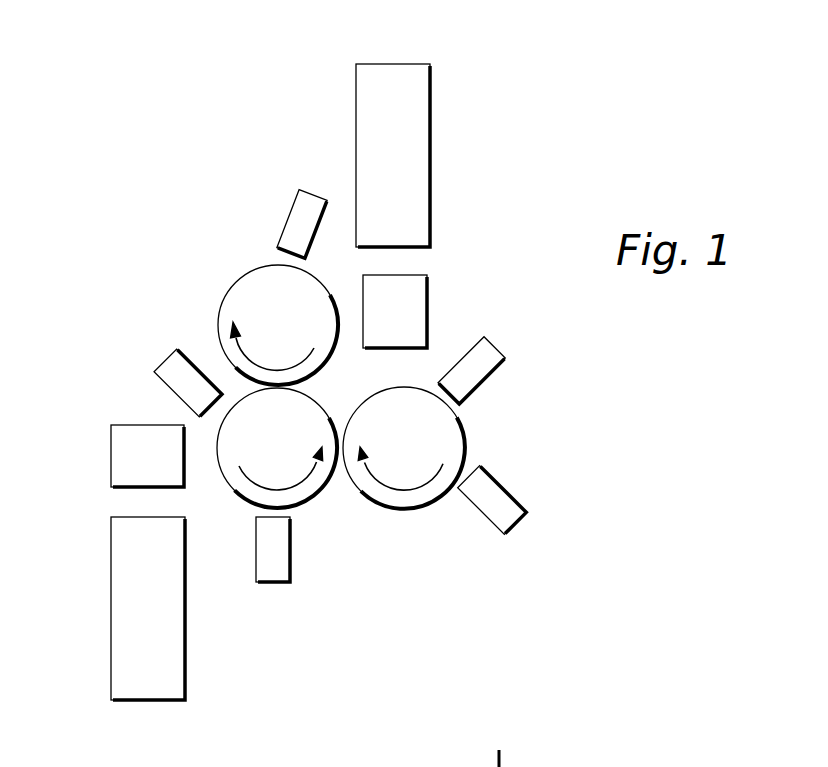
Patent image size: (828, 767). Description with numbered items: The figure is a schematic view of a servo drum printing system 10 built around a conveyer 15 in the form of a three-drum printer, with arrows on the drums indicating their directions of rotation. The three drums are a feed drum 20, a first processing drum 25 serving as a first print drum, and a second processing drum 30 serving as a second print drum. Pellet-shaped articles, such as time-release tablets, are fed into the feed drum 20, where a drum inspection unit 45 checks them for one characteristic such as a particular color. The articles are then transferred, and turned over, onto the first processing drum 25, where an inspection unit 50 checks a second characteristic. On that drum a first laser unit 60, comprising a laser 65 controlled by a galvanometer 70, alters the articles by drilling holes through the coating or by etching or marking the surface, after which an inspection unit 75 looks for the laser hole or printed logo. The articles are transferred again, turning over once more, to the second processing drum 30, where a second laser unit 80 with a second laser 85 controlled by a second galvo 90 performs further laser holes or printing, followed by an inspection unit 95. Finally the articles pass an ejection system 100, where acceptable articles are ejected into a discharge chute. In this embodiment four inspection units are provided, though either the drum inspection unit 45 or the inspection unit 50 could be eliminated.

The servo drum printing system 10 is at (140, 118).
The conveyer 15 is at (175, 316).
The feed drum 20 is at (258, 337).
The first processing drum 25 is at (258, 460).
The second processing drum 30 is at (386, 460).
The drum inspection unit 45 is at (313, 202).
The inspection unit 50 is at (170, 363).
The first laser unit 60 is at (102, 453).
The laser 65 is at (131, 613).
The galvanometer 70 is at (130, 466).
The inspection unit 75 is at (283, 563).
The second laser unit 80 is at (440, 155).
The second laser 85 is at (410, 167).
The second galvo 90 is at (380, 321).
The inspection unit 95 is at (493, 350).
The ejection system 100 is at (493, 492).